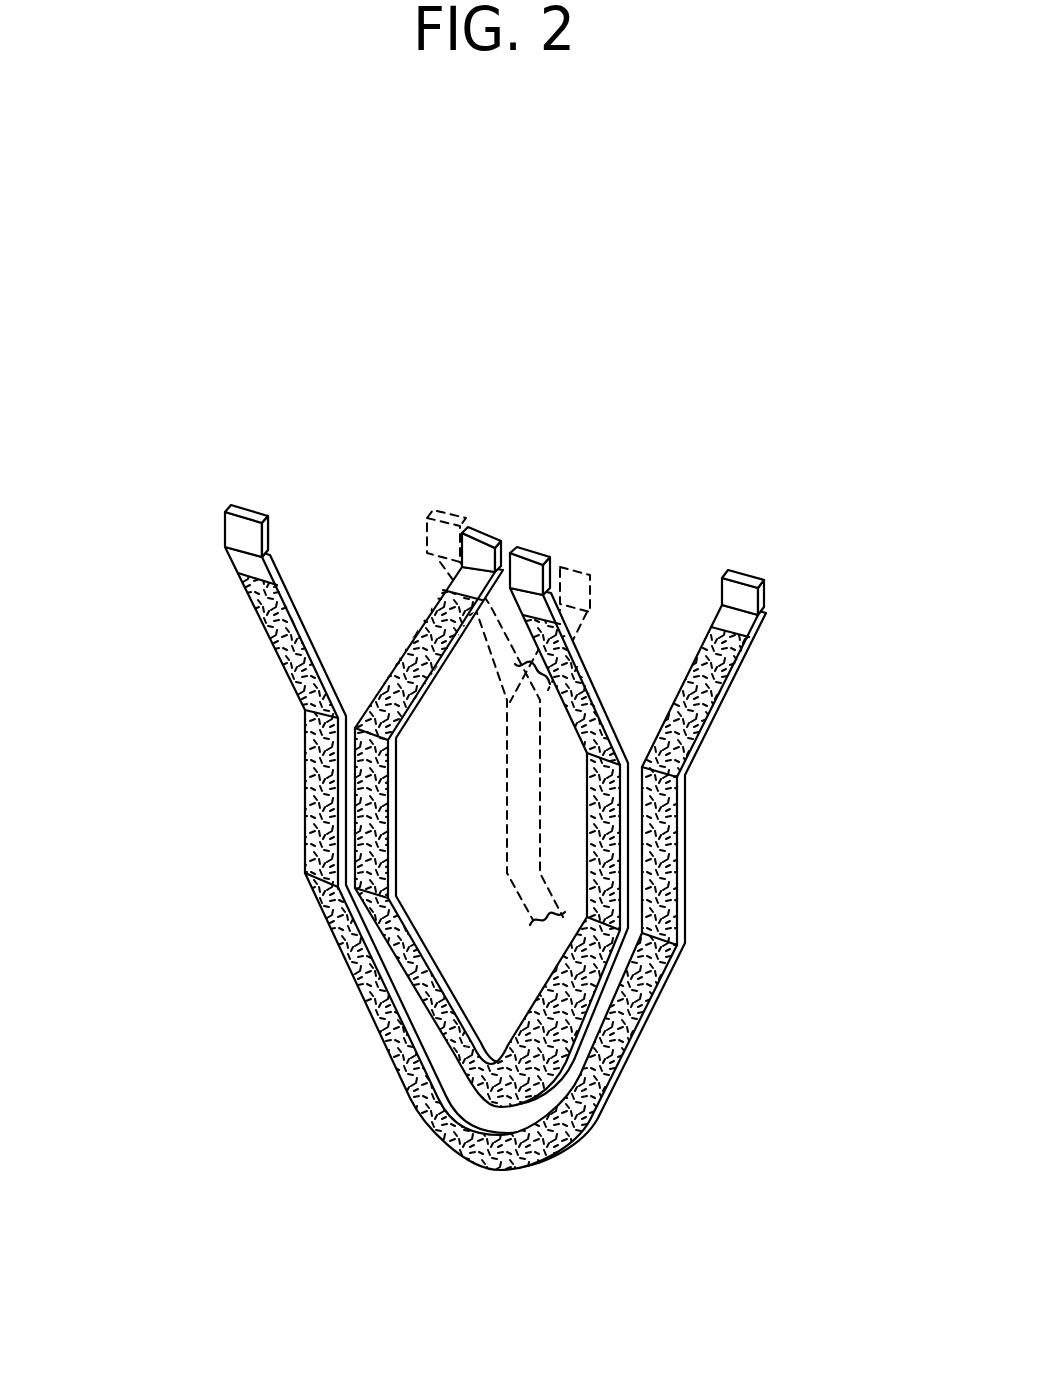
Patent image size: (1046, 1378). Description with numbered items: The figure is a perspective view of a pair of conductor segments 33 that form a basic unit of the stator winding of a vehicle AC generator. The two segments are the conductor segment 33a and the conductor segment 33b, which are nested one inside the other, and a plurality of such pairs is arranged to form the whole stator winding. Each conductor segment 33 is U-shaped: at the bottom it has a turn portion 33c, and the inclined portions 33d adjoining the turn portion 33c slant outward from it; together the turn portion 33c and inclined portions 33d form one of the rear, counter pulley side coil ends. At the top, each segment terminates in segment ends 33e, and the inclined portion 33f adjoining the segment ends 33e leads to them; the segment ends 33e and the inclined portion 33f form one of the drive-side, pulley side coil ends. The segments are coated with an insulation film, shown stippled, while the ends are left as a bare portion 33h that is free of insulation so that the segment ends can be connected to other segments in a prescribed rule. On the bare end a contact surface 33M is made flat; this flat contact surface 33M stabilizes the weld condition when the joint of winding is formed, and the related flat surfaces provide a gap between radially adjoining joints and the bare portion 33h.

The conductor segment 33 is at (327, 502).
The conductor segment 33a is at (320, 817).
The conductor segment 33b is at (373, 790).
The turn portion 33c is at (485, 1083).
The inclined portion 33d is at (420, 1003).
The segment end 33e is at (483, 530).
The inclined portion 33f is at (594, 691).
The bare portion 33h is at (235, 532).
The contact surface 33M is at (265, 538).